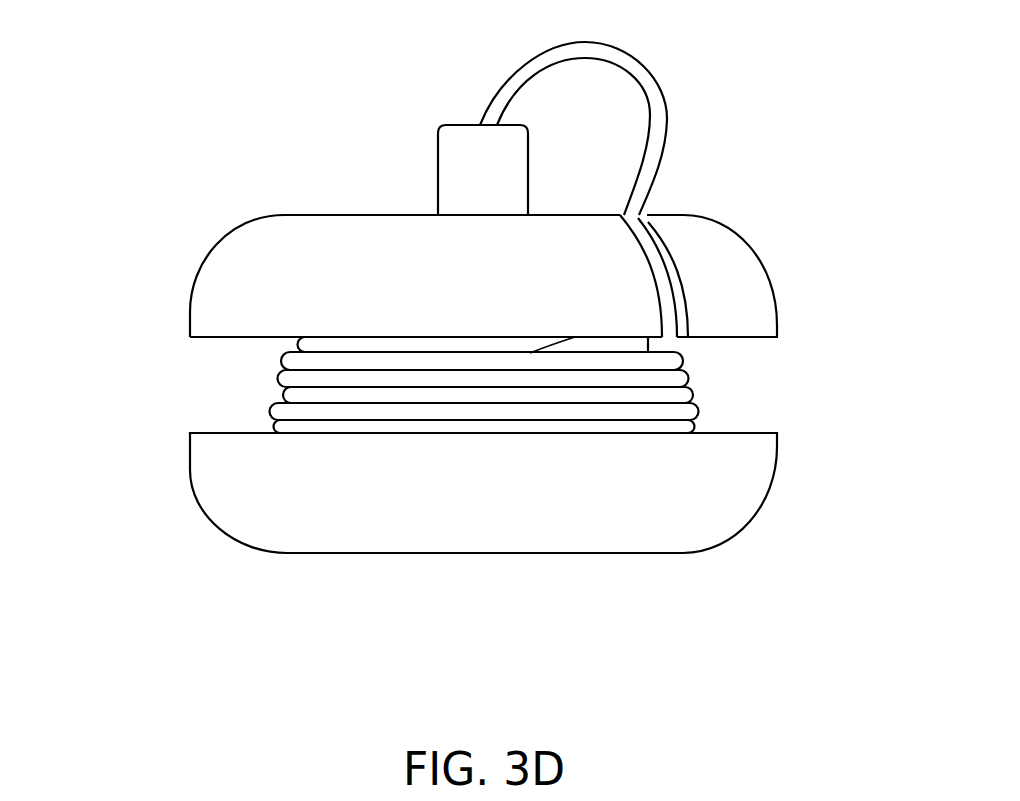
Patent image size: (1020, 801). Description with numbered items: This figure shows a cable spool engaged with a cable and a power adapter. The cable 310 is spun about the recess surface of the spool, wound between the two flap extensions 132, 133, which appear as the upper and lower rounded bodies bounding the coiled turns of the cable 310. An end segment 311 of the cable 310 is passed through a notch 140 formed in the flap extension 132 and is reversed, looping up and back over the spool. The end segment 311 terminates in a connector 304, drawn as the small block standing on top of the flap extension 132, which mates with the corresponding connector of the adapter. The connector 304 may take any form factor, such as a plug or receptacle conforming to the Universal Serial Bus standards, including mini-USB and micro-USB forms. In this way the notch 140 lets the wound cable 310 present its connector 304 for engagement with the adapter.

The flap extension 132 is at (223, 270).
The flap extension 133 is at (234, 502).
The connector 304 is at (446, 168).
The end segment 311 is at (652, 100).
The notch 140 is at (672, 276).
The cable 310 is at (712, 407).